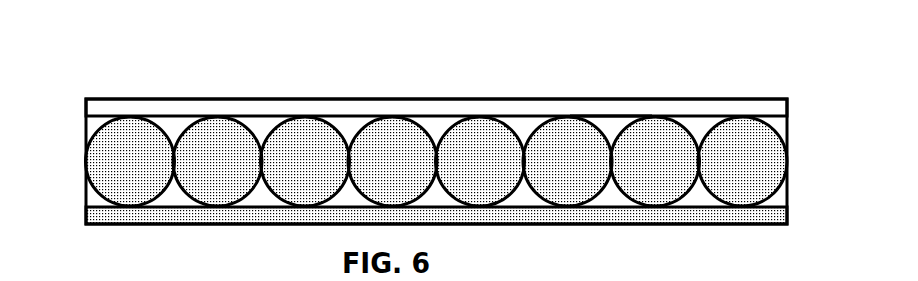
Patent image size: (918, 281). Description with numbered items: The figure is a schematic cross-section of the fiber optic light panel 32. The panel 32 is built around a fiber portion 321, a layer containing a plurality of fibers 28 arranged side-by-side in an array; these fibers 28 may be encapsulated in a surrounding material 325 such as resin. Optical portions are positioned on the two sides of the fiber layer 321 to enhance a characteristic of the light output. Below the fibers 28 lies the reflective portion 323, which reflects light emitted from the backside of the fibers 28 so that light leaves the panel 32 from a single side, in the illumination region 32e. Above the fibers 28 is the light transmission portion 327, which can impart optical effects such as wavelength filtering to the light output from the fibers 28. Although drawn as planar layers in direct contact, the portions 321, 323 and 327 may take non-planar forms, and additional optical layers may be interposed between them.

The panel 32 is at (734, 69).
The illumination region 32e is at (440, 64).
The light transmission portion 327 is at (799, 100).
The reflective portion 323 is at (799, 205).
The fiber portion 321 is at (82, 115).
The fibers 28 is at (437, 161).
The surrounding material 325 is at (609, 130).